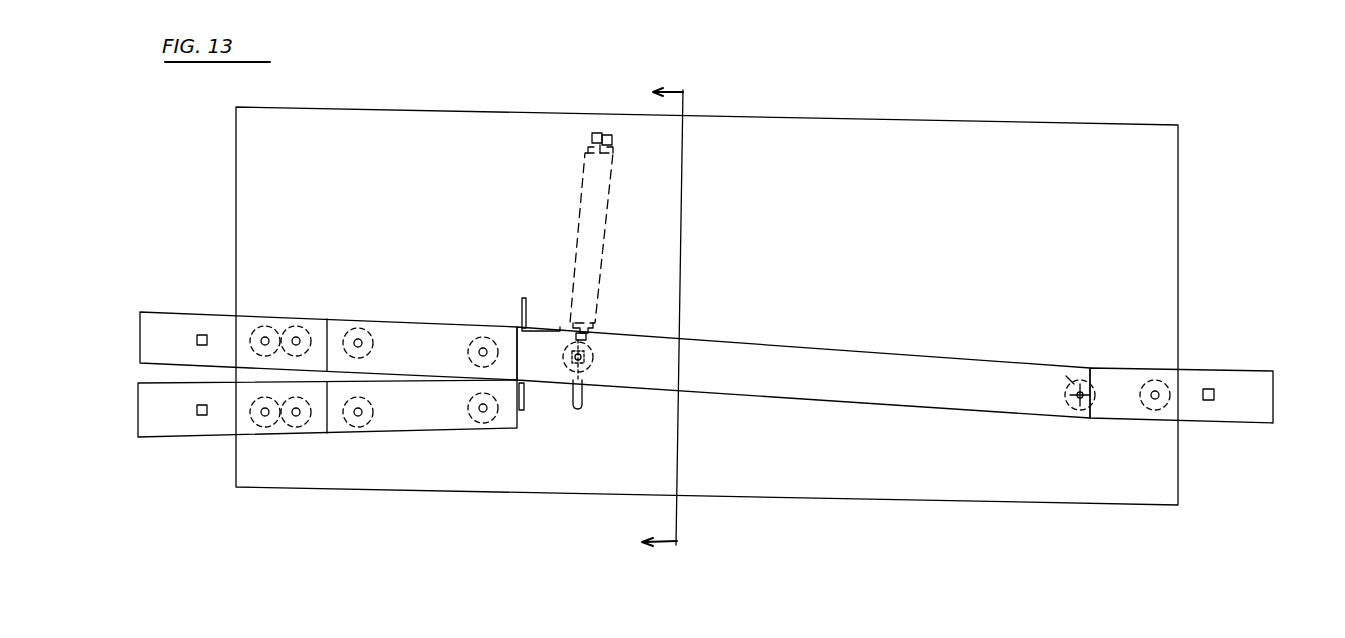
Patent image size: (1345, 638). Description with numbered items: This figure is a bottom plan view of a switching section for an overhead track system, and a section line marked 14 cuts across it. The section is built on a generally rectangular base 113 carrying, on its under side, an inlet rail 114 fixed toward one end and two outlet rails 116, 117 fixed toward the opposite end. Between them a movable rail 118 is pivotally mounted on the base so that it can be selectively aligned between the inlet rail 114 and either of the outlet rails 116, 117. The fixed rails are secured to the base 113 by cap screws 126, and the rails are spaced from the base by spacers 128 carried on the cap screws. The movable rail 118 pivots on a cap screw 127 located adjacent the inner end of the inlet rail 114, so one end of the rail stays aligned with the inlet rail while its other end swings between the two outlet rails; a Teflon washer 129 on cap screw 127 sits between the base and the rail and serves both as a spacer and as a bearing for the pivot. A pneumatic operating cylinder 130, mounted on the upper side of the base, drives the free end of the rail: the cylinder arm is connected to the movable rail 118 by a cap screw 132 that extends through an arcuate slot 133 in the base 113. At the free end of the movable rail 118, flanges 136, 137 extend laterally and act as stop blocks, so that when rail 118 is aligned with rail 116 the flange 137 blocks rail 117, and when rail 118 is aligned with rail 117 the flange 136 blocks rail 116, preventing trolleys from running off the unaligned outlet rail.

The base 113 is at (855, 135).
The inlet rail 114 is at (1228, 375).
The outlet rail 116 is at (388, 328).
The outlet rail 117 is at (400, 425).
The movable rail 118 is at (838, 362).
The cap screw 126 is at (298, 338).
The cap screw 127 is at (1078, 395).
The spacer 128 is at (477, 328).
The Teflon washer 129 is at (1070, 370).
The pneumatic operating cylinder 130 is at (580, 195).
The cap screw 132 is at (585, 357).
The arcuate slot 133 is at (581, 408).
The flange 136 is at (523, 312).
The flange 137 is at (527, 403).
The section line 14- 14 is at (641, 313).